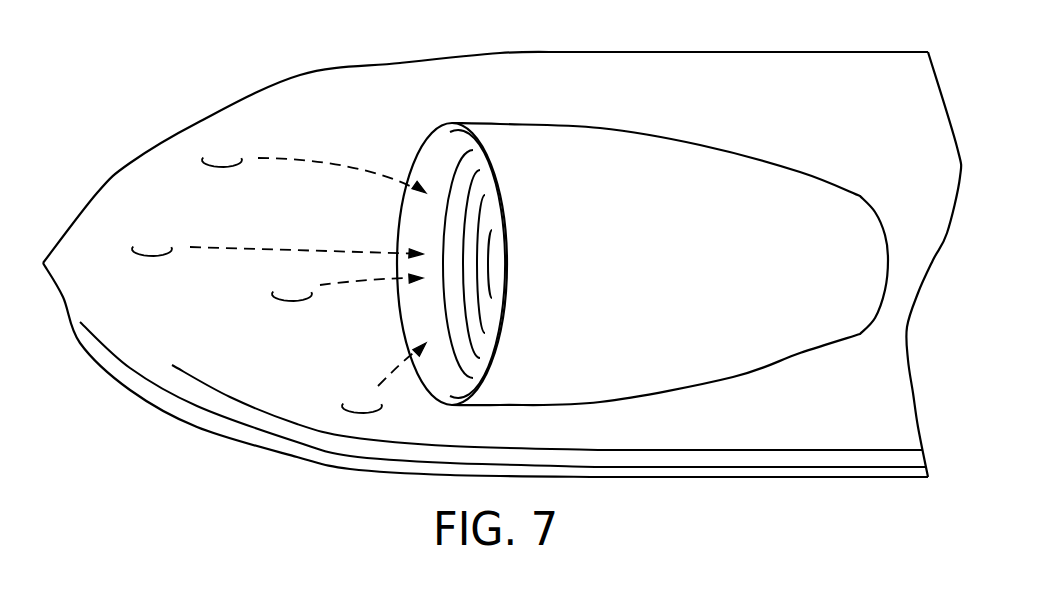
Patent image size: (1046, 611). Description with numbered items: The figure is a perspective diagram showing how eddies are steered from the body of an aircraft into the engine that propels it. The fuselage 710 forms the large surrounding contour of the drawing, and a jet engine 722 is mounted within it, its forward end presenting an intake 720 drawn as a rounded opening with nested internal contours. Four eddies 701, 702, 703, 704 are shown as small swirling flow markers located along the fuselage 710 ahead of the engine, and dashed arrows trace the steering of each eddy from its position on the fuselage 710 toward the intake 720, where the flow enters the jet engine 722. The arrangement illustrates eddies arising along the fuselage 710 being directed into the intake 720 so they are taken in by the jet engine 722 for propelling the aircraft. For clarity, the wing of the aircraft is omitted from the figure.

The eddy 701 is at (212, 155).
The eddy 702 is at (142, 244).
The eddy 703 is at (282, 289).
The eddy 704 is at (352, 401).
The fuselage 710 is at (167, 311).
The intake 720 is at (418, 150).
The jet engine 722 is at (635, 276).